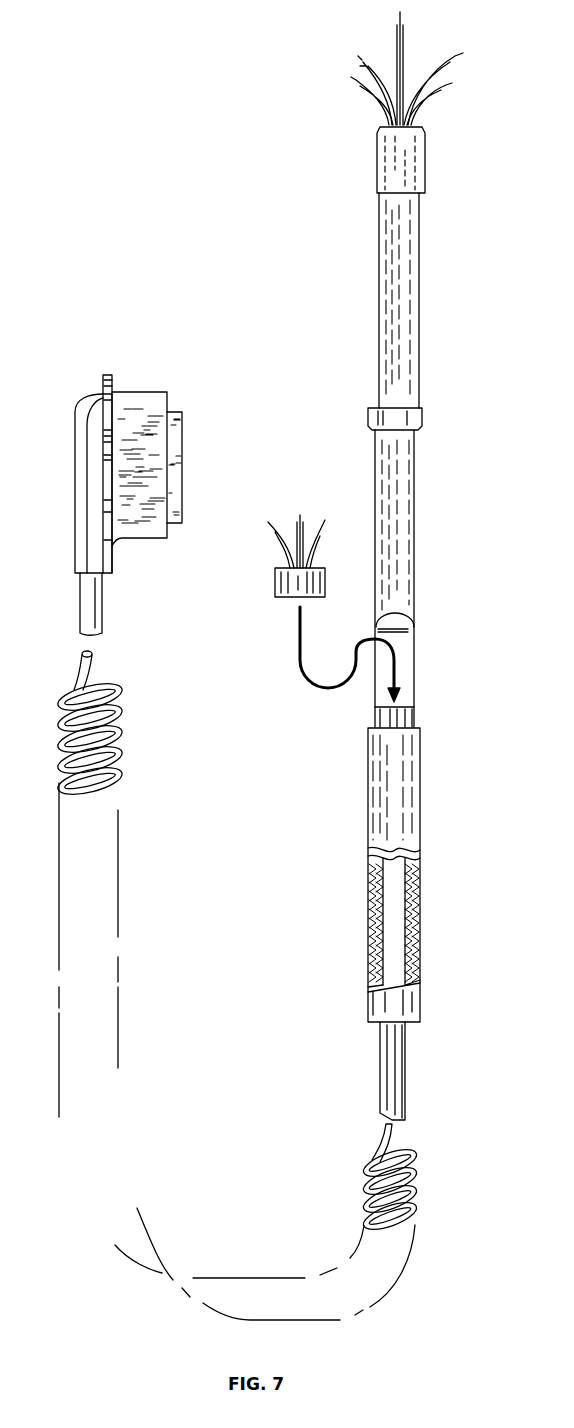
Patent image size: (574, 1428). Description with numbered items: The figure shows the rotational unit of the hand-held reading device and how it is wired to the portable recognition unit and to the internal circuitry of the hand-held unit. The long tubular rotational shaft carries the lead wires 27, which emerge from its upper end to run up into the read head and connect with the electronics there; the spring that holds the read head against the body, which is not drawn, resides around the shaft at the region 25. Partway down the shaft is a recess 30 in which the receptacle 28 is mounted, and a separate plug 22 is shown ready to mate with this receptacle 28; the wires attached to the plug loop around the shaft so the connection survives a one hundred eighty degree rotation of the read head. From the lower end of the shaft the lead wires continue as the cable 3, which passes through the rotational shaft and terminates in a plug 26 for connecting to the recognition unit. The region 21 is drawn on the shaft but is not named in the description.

The lead wires 27 is at (425, 60).
The shaft portion where the spring resides 25 is at (403, 302).
The lower tubular housing 21 is at (400, 572).
The recess 30 is at (402, 668).
The plug 22 is at (285, 582).
The receptacle 28 is at (410, 713).
The cable 3 is at (378, 1152).
The plug 26 is at (73, 493).